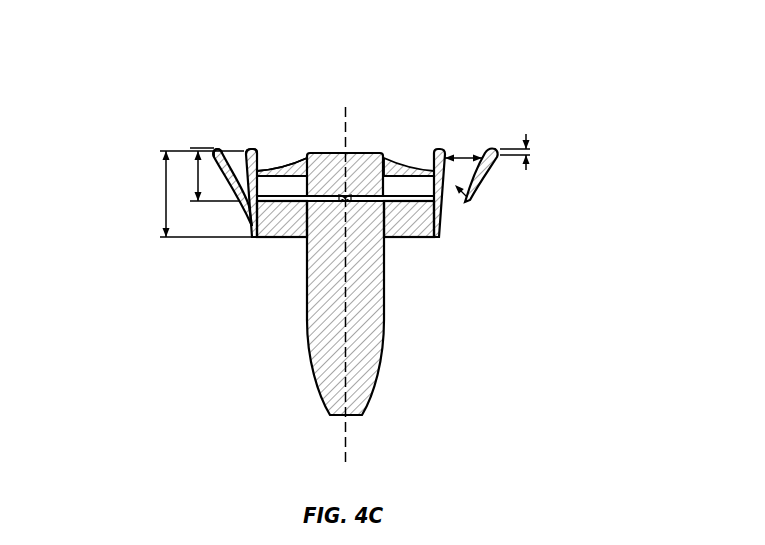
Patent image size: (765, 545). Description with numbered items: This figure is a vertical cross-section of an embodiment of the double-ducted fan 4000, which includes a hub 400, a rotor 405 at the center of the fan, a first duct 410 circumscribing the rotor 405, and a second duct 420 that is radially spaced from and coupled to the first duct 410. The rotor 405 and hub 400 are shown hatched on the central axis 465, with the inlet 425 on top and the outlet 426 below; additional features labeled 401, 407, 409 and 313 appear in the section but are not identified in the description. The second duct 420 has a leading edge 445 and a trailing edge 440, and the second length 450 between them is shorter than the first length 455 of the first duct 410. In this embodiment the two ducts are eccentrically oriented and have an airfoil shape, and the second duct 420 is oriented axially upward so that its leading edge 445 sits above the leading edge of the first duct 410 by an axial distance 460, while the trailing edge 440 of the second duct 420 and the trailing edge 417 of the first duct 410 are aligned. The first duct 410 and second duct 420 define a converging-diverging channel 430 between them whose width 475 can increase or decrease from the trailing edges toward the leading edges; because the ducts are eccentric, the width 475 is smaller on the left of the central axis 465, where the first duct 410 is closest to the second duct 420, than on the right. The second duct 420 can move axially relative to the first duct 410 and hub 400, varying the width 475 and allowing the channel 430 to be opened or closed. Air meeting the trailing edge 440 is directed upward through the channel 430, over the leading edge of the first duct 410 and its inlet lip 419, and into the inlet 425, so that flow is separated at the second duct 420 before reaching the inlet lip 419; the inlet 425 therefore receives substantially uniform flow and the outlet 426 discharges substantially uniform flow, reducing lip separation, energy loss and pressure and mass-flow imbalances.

The double-ducted fan 4000 is at (262, 376).
The hub 400 is at (367, 308).
The rotor 405 is at (362, 168).
The interface line / pivot 401 is at (336, 196).
The membrane 407 is at (299, 160).
The inlet 425 is at (283, 148).
The outlet 426 is at (277, 246).
The base plate portion 409 is at (402, 223).
The first duct 410 is at (440, 207).
The trailing edge of the first duct 417 is at (252, 230).
The inlet lip 419 is at (249, 150).
The trailing edge of the second duct 440 is at (241, 192).
The flap tip 313 is at (220, 150).
The leading edge of the second duct 445 is at (213, 150).
The second duct 420 is at (488, 164).
The channel 430 is at (470, 200).
The width of the channel 475 is at (463, 156).
The axial distance 460 is at (528, 137).
The second length 450 is at (195, 172).
The first length 455 is at (165, 200).
The central axis 465 is at (346, 436).